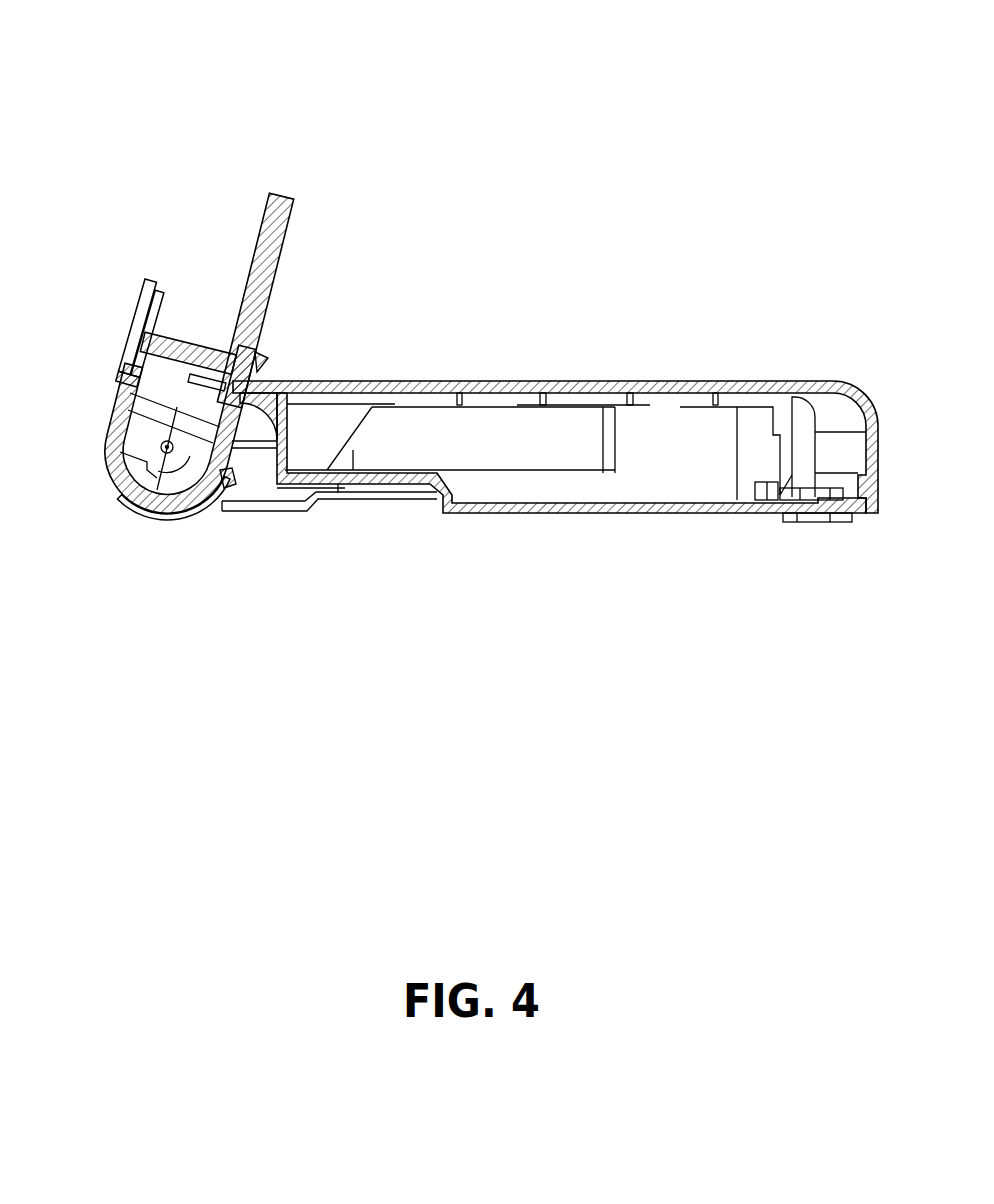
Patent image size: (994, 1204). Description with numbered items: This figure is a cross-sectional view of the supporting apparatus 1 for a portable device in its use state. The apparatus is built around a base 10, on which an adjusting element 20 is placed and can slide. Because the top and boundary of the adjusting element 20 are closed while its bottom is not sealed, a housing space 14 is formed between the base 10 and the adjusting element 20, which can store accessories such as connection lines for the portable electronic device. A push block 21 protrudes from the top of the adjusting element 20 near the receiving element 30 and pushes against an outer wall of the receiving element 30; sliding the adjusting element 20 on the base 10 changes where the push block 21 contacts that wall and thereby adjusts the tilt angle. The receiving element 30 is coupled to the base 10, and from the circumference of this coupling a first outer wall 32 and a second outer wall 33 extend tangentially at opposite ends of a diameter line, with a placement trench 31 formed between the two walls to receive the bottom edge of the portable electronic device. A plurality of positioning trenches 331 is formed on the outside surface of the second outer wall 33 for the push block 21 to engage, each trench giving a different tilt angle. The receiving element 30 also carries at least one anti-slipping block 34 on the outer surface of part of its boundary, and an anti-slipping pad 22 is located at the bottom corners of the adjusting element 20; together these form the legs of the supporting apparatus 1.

The supporting apparatus 1 is at (530, 285).
The base 10 is at (542, 517).
The housing space 14 is at (558, 440).
The adjusting element 20 is at (622, 383).
The push block 21 is at (293, 380).
The anti-slipping pad 22 is at (835, 517).
The receiving element 30 is at (113, 490).
The placement trench 31 is at (200, 335).
The first outer wall 32 is at (138, 327).
The second outer wall 33 is at (290, 233).
The positioning trench 331 is at (253, 352).
The anti-slipping block 34 is at (167, 517).